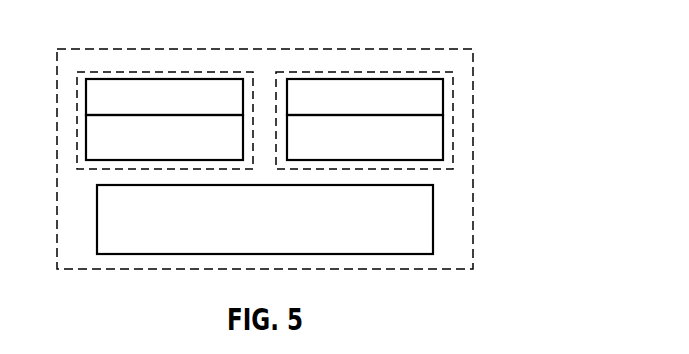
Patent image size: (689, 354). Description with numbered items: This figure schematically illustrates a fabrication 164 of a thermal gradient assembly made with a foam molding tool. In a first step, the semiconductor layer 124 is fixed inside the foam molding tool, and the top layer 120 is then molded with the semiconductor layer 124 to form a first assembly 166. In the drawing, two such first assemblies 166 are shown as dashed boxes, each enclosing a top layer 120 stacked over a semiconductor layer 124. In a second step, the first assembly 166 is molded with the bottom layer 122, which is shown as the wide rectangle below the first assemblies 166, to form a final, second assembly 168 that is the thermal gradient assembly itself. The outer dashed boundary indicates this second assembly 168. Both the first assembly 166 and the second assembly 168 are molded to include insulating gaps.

The fabrication 164 is at (453, 35).
The first assembly 166 is at (452, 140).
The top layer 120 is at (430, 108).
The semiconductor layer 124 is at (430, 139).
The bottom layer 122 is at (420, 233).
The second assembly 168 is at (473, 256).